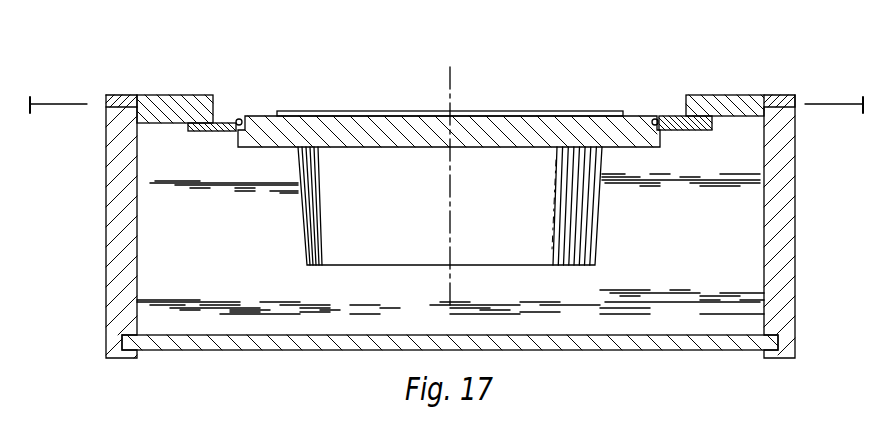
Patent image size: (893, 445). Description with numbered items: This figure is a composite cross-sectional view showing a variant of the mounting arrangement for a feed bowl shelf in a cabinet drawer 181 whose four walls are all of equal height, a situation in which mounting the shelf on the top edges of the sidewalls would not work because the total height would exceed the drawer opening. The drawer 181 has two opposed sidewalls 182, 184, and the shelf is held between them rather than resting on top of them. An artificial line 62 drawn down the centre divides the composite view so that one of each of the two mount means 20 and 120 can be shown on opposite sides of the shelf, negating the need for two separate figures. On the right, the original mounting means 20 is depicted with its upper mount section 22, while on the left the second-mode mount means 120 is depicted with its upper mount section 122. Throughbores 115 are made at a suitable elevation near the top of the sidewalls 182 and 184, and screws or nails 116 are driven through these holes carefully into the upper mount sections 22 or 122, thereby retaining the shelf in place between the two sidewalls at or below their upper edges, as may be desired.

The drawer 181 is at (290, 384).
The sidewall 182 is at (106, 255).
The sidewall 184 is at (795, 250).
The throughbores 115 is at (131, 101).
The screws/nails 116 is at (70, 105).
The mount means 120 is at (185, 95).
The upper mount section 122 is at (213, 103).
The mounting means 20 is at (720, 95).
The upper mount section 22 is at (686, 108).
The artificial line 62 is at (450, 87).